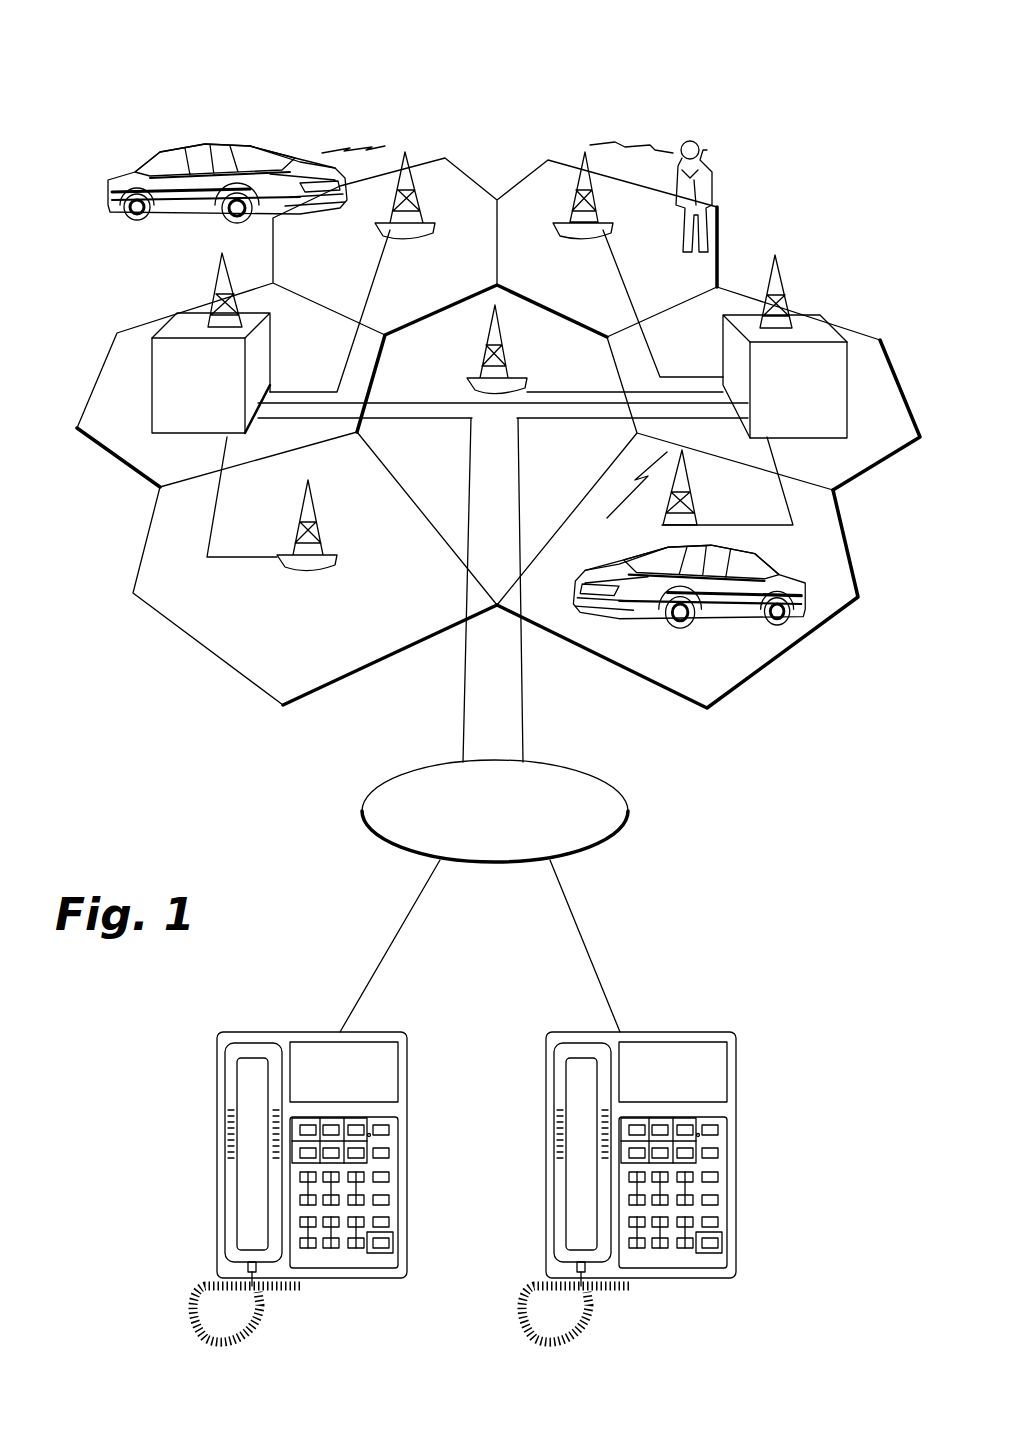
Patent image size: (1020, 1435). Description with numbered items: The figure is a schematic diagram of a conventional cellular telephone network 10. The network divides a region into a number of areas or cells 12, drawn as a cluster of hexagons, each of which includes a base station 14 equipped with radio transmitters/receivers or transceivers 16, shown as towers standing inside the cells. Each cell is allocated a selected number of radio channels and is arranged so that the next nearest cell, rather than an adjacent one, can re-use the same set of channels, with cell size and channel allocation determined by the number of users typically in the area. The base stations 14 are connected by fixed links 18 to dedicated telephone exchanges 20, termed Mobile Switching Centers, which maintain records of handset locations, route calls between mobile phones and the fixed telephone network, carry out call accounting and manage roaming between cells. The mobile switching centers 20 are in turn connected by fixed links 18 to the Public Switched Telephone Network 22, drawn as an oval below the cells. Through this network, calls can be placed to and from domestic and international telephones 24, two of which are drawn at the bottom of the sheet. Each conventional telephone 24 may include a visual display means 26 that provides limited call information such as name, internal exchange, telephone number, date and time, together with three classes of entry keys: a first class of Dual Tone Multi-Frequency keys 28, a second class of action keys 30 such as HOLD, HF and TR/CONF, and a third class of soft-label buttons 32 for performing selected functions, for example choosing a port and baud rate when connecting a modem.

The cellular telephone network 10 is at (492, 80).
The cell 12 is at (803, 627).
The base station 14 is at (477, 160).
The radio transmitters/receivers (transceivers) 16 is at (406, 150).
The fixed links 18 is at (358, 330).
The telephone exchange (Mobile Switching Center) 20 is at (150, 418).
The Public Switched Telephone Network 22 is at (630, 817).
The telephone 24 is at (678, 1186).
The visual display means 26 is at (348, 1150).
The Dual Tone Multi-Frequency (DTMF) keys 28 is at (693, 1197).
The action keys 30 is at (360, 1125).
The soft-label buttons 32 is at (390, 1200).